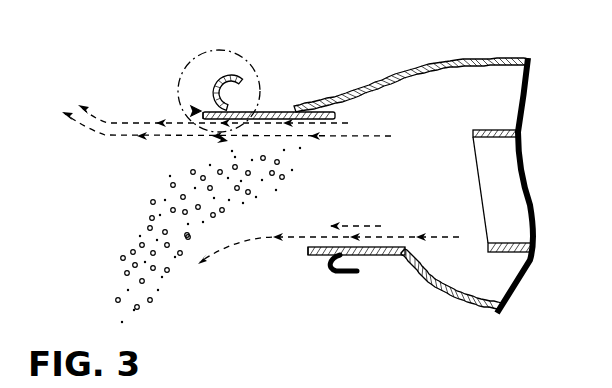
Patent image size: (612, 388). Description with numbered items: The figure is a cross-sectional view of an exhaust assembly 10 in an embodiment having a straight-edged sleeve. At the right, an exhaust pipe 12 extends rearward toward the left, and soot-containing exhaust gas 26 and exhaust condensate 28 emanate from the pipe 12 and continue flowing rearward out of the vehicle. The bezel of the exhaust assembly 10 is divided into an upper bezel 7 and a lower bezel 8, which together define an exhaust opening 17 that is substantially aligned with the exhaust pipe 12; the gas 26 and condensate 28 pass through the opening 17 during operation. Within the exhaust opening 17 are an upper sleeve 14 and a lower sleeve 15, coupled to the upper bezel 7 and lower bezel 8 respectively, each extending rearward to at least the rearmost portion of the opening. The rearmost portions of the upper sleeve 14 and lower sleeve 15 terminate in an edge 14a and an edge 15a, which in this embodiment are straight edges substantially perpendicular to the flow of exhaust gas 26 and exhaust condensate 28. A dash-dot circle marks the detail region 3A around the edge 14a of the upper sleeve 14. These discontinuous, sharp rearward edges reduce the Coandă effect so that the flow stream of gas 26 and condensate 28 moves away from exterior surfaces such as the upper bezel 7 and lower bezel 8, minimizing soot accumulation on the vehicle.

The exhaust assembly 10 is at (382, 66).
The exhaust pipe 12 is at (484, 128).
The upper sleeve 14 is at (278, 110).
The edge of upper sleeve 14a is at (199, 112).
The upper bezel 7 is at (216, 81).
The detail region 3A is at (228, 56).
The lower sleeve 15 is at (390, 257).
The edge of lower sleeve 15a is at (300, 251).
The lower bezel 8 is at (336, 277).
The exhaust gas 26 is at (108, 122).
The exhaust opening 17 is at (303, 205).
The exhaust condensate 28 is at (138, 230).